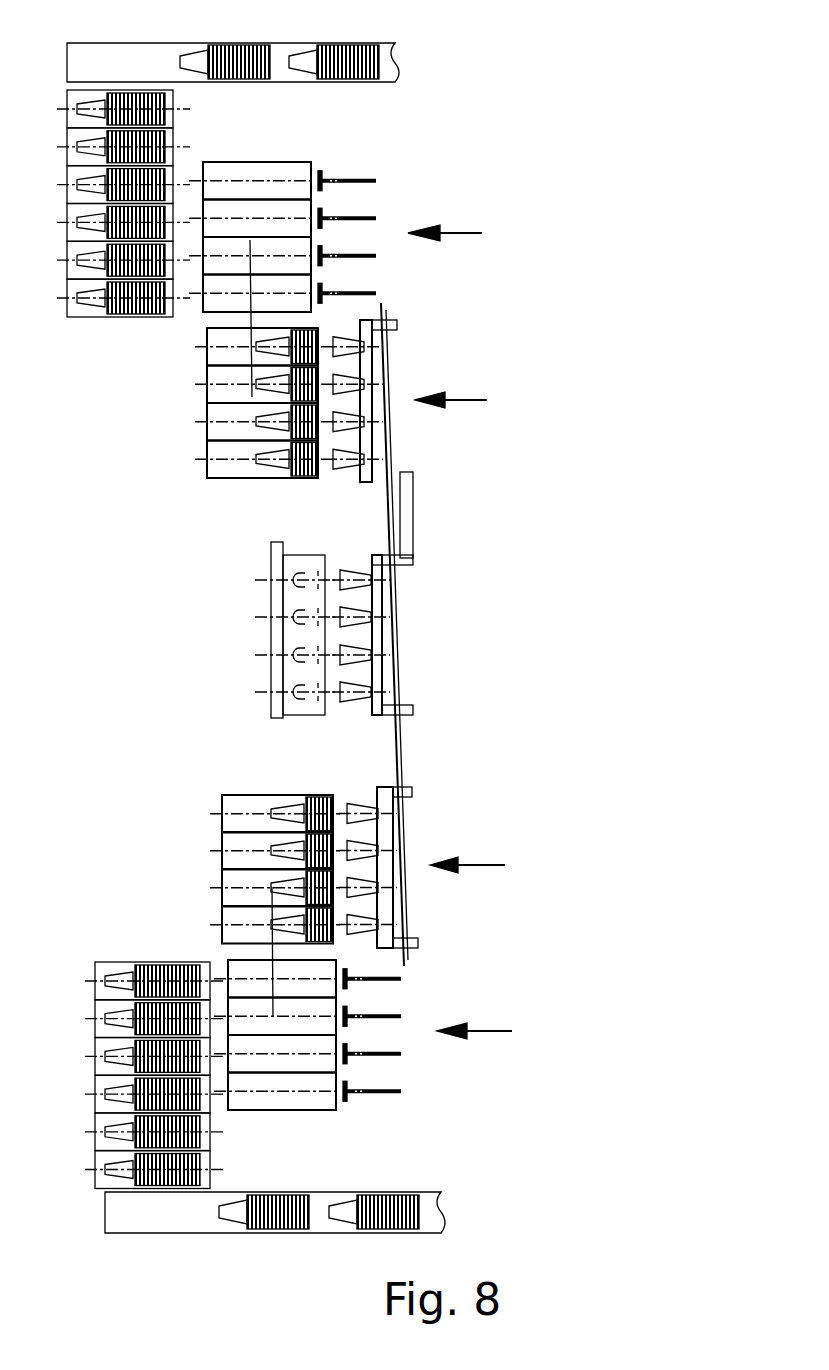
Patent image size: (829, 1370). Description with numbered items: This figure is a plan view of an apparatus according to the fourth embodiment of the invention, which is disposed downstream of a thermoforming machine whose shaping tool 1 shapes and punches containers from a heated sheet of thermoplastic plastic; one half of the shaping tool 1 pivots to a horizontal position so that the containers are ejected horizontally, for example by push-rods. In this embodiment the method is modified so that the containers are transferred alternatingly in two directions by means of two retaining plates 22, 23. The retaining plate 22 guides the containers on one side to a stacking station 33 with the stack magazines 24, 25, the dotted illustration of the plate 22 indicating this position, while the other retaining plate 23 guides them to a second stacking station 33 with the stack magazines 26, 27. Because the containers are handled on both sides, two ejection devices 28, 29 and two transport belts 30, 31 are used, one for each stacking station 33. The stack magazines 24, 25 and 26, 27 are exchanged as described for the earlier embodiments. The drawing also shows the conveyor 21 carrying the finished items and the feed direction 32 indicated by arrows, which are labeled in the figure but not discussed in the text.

The shaping tool 1 is at (271, 638).
The conveyor 21 is at (278, 53).
The retaining plate 22 is at (373, 636).
The retaining plate 23 is at (370, 433).
The stack magazine 24 is at (242, 805).
The stack magazine 25 is at (287, 1100).
The stack magazine 26 is at (223, 468).
The stack magazine 27 is at (253, 168).
The ejection device 28 is at (382, 1093).
The ejection device 29 is at (347, 175).
The transport belt 30 is at (105, 1083).
The transport belt 31 is at (77, 197).
The feed direction 32 is at (460, 619).
The stacking station 33 is at (460, 619).